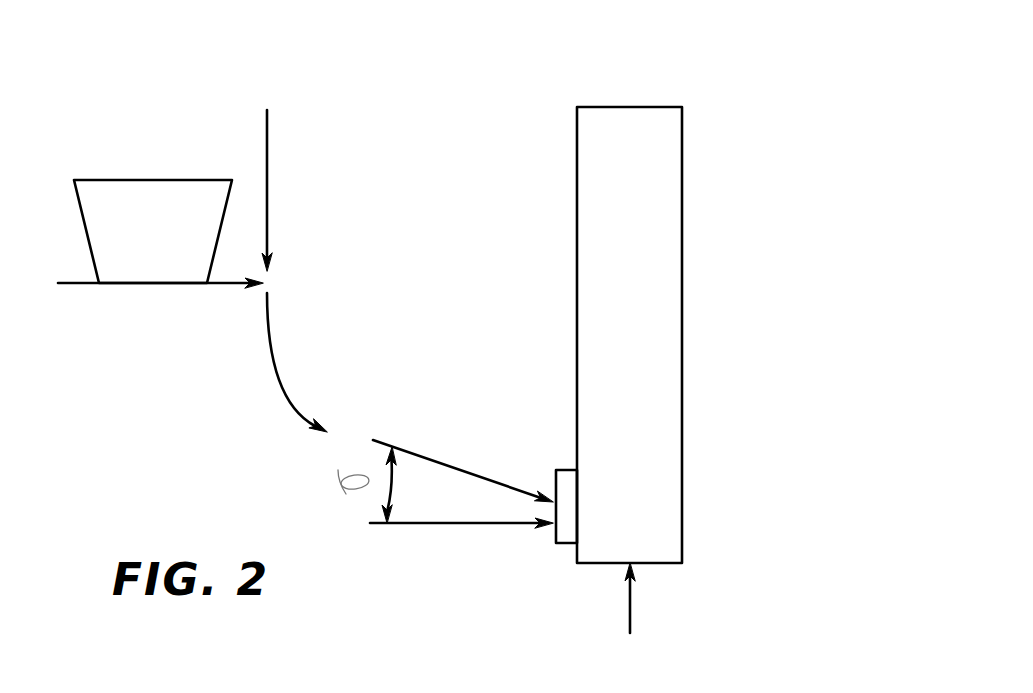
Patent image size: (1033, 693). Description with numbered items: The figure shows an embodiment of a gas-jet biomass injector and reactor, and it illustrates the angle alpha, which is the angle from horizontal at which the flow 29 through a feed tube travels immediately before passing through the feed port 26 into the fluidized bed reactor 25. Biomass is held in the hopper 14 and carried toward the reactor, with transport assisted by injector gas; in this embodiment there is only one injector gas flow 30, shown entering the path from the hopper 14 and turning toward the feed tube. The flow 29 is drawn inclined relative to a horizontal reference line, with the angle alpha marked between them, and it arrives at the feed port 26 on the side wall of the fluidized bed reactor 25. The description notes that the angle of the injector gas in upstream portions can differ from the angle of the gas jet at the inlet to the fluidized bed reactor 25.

The hopper 14 is at (118, 194).
The injector gas flow 30 is at (267, 140).
The flow 29 is at (480, 468).
The fluidized bed reactor 25 is at (667, 345).
The feed port 26 is at (575, 522).